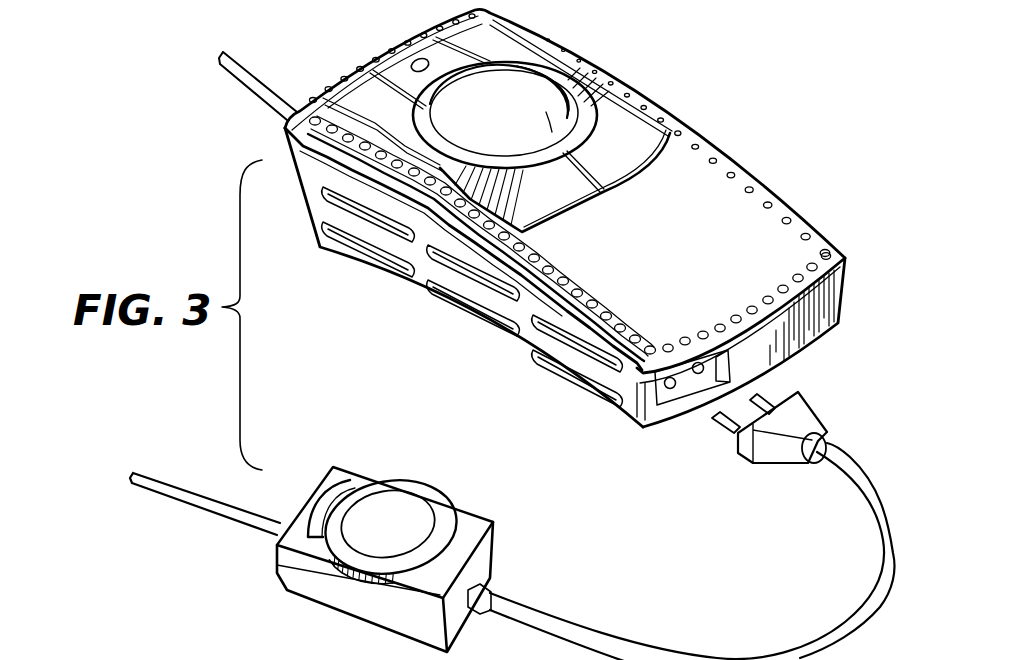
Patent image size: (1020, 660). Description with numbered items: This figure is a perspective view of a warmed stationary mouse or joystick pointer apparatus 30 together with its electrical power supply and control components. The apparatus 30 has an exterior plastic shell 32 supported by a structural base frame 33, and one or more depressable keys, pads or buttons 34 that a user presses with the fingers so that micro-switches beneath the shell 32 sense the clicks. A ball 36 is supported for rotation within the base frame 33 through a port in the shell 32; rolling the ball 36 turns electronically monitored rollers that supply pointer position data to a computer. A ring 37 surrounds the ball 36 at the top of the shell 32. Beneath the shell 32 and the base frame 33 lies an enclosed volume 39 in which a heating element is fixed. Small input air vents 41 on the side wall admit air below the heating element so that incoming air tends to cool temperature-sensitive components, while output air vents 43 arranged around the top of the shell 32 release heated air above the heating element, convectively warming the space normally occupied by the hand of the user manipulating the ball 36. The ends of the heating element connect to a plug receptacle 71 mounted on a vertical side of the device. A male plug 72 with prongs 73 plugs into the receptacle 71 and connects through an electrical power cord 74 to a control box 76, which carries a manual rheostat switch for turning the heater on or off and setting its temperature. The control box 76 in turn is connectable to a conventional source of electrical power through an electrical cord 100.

The warmed stationary mouse or joystick pointer apparatus 30 is at (690, 124).
The exterior plastic shell 32 is at (772, 214).
The structural base frame 33 is at (830, 306).
The depressable keys, pads or buttons 34 is at (403, 62).
The ball 36 is at (523, 95).
The retaining ring 37 is at (566, 110).
The enclosed volume 39 is at (203, 652).
The input air vents 41 is at (470, 309).
The output air vents 43 is at (362, 98).
The plug receptacle 71 is at (685, 383).
The male plug 72 is at (817, 418).
The prongs 73 is at (720, 414).
The electrical power cord 74 is at (633, 643).
The control box 76 is at (493, 573).
The electrical cord 100 is at (233, 527).